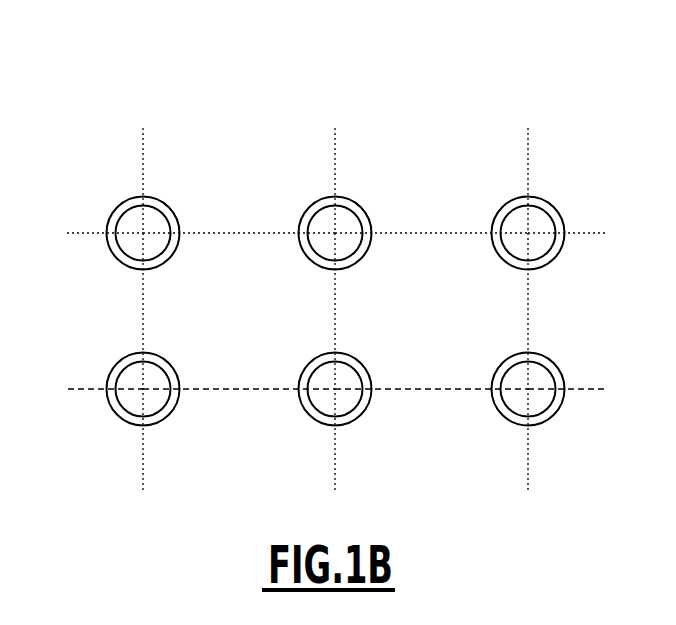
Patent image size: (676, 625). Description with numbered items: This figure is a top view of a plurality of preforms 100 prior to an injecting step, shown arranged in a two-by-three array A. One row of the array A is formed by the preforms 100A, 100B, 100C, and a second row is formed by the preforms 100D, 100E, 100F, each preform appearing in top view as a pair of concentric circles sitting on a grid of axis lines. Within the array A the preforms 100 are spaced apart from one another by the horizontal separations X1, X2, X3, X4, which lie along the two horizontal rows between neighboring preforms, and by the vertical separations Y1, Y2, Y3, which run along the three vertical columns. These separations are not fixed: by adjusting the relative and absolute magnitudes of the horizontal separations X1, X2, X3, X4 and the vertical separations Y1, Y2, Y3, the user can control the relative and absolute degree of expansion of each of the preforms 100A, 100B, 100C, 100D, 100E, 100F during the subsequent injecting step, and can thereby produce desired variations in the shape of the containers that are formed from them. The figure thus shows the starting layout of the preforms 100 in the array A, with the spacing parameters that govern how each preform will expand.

The preforms 100 is at (597, 184).
The preform 100A is at (119, 363).
The preform 100B is at (311, 365).
The preform 100C is at (504, 365).
The preform 100D is at (119, 206).
The preform 100E is at (311, 209).
The preform 100F is at (504, 209).
The horizontal separation X1 is at (243, 233).
The horizontal separation X2 is at (433, 233).
The horizontal separation X3 is at (243, 389).
The horizontal separation X4 is at (433, 389).
The vertical separation Y1 is at (143, 312).
The vertical separation Y2 is at (335, 312).
The vertical separation Y3 is at (528, 311).
The array A is at (572, 74).